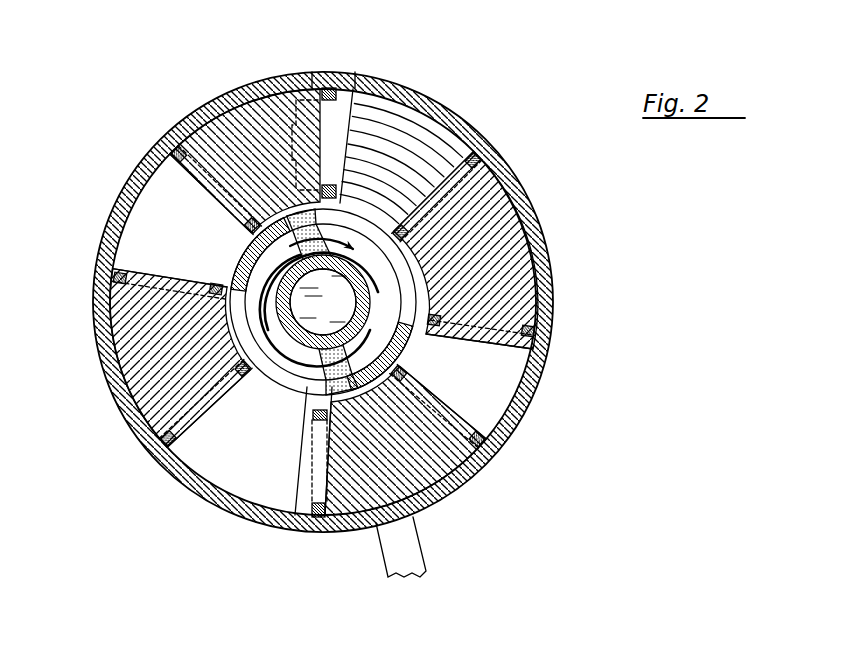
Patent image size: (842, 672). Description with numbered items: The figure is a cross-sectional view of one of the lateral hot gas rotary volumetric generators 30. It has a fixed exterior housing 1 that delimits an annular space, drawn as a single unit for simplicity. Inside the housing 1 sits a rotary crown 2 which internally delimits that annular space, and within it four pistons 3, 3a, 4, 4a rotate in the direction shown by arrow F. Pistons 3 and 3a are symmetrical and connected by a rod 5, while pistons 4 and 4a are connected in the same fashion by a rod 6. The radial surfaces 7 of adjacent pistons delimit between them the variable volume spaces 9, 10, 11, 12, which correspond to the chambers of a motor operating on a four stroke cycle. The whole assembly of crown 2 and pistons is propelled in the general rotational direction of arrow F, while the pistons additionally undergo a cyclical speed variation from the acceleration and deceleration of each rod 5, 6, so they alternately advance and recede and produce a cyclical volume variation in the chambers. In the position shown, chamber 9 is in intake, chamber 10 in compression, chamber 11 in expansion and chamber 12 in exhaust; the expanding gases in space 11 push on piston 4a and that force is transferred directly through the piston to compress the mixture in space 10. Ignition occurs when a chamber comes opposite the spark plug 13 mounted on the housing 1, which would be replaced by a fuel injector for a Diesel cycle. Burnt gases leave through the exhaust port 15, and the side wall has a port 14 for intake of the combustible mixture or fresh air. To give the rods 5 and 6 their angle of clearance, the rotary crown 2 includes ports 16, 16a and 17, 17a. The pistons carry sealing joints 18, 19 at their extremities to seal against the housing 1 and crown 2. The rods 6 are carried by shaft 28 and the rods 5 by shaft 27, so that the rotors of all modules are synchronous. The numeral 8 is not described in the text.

The fixed exterior housing 1 is at (548, 341).
The rotary crown 2 is at (388, 216).
The piston 3 is at (546, 236).
The piston 3a is at (140, 338).
The piston 4 is at (283, 107).
The piston 4a is at (435, 483).
The rod 5 is at (420, 345).
The rod 6 is at (240, 255).
The radial surface 7 is at (512, 376).
The bolt 8 is at (480, 411).
The variable volume space 9 is at (443, 138).
The variable volume space 10 is at (493, 353).
The variable volume space 11 is at (245, 488).
The variable volume space 12 is at (133, 262).
The spark plug 13 is at (390, 563).
The intake port 14 is at (397, 140).
The exhaust port 15 is at (212, 107).
The port 16 is at (303, 191).
The port 16a is at (344, 412).
The port 17 is at (428, 262).
The port 17a is at (225, 310).
The sealing joint 18 is at (332, 93).
The sealing joint 19 is at (176, 160).
The shaft 27 is at (300, 360).
The shaft 28 is at (308, 393).
The lateral hot gas rotary volumetric generator 30 is at (557, 300).